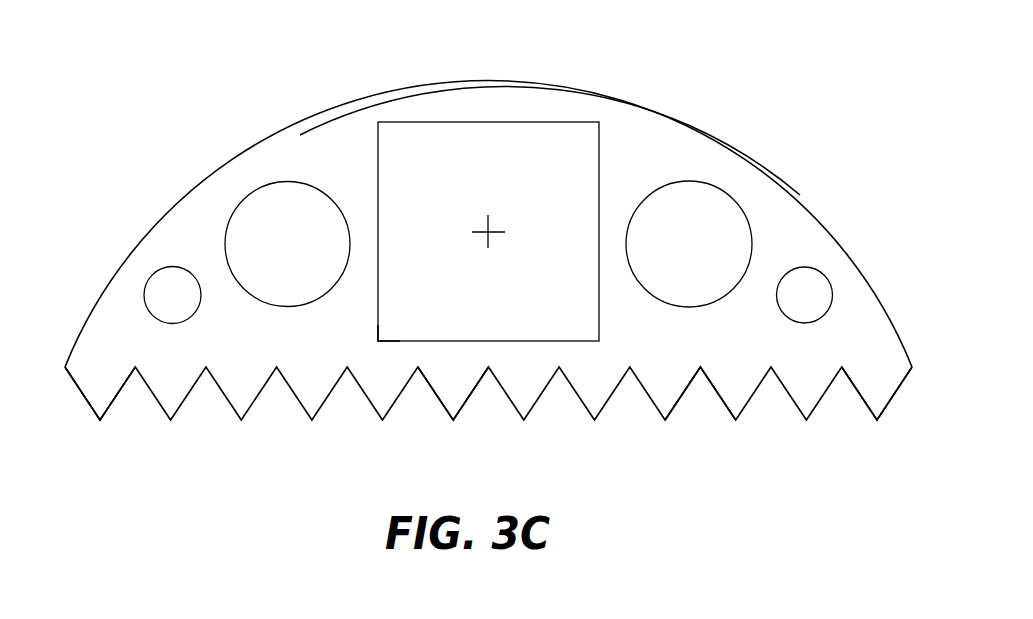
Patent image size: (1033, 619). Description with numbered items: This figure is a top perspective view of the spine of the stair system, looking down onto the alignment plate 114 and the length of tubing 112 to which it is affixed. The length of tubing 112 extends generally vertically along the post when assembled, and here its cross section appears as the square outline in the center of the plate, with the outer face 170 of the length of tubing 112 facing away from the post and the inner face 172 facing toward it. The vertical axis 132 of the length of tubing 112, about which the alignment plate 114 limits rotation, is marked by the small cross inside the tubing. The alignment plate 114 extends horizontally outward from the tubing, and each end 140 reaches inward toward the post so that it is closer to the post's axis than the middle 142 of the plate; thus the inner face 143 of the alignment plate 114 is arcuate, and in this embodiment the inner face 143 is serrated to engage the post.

The length of tubing 112 is at (505, 122).
The alignment plate 114 is at (774, 180).
The vertical axis 132 is at (485, 228).
The end 140 is at (100, 420).
The middle 142 is at (452, 418).
The inner face 143 is at (692, 402).
The outer face 170 is at (459, 122).
The inner face 172 is at (386, 342).